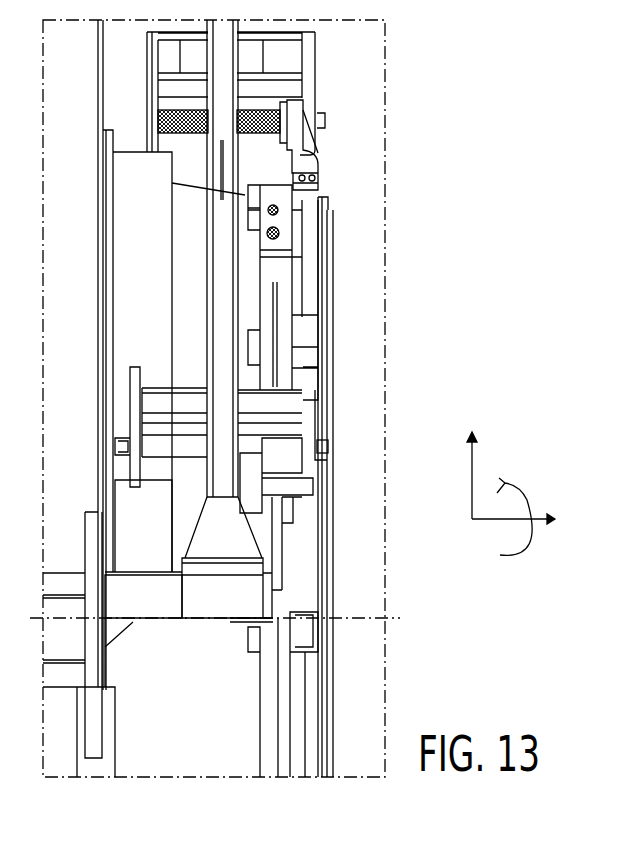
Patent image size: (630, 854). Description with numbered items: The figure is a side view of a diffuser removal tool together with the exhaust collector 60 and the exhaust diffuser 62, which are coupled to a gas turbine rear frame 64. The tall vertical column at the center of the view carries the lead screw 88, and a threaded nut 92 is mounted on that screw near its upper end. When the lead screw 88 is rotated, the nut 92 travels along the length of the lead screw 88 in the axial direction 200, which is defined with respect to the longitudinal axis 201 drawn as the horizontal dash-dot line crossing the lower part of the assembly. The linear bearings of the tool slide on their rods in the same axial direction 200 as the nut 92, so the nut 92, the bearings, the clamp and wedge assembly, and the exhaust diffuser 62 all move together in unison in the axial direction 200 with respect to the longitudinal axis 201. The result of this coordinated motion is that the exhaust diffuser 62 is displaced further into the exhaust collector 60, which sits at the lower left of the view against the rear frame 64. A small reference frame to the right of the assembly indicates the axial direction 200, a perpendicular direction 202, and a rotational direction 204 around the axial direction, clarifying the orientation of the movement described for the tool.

The exhaust collector 60 is at (63, 768).
The exhaust diffuser 62 is at (213, 770).
The gas turbine rear frame 64 is at (353, 225).
The lead screw 88 is at (258, 107).
The nut 92 is at (298, 112).
The axial direction 200 is at (510, 520).
The longitudinal axis 201 is at (400, 612).
The vertical axis 202 is at (472, 480).
The rotation direction 204 is at (525, 490).